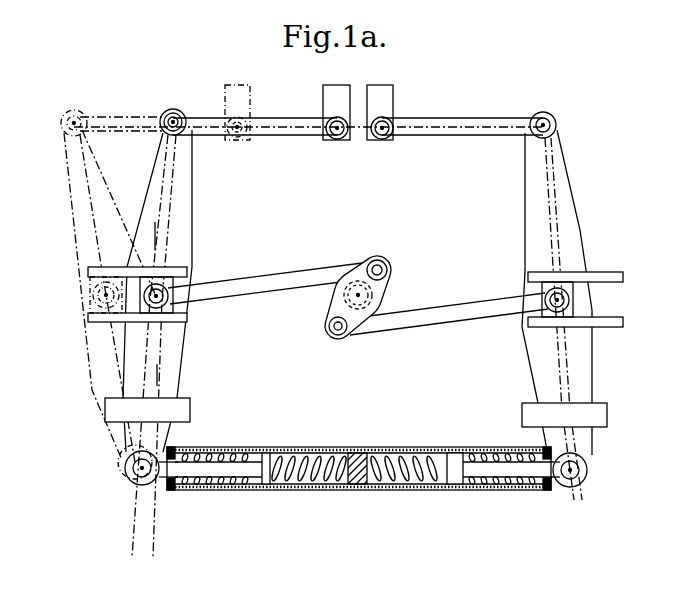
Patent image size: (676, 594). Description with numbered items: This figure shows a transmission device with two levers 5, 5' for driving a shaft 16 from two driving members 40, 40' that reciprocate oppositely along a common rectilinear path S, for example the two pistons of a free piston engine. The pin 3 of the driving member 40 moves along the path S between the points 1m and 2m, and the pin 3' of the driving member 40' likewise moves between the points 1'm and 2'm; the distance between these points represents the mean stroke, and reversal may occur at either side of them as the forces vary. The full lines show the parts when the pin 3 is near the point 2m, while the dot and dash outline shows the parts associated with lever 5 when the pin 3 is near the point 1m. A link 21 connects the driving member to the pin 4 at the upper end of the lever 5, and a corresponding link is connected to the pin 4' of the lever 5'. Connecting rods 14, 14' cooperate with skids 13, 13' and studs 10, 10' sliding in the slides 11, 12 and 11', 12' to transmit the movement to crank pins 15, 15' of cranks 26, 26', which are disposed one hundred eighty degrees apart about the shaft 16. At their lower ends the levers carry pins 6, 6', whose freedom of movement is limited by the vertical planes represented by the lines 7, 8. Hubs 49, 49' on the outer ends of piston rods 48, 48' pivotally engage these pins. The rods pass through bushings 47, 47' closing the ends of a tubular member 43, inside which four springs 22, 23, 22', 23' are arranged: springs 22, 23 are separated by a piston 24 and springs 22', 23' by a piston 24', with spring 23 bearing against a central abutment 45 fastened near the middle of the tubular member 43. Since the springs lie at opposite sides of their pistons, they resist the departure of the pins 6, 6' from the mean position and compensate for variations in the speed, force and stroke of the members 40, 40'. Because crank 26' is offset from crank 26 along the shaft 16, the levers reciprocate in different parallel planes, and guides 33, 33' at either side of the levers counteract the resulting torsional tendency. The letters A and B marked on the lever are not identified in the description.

The pin 4 is at (123, 110).
The pin 4' is at (554, 122).
The driving member 40 is at (273, 101).
The driving member 40' is at (385, 101).
The pin 3 is at (287, 111).
The pin 3' is at (396, 116).
The link 21 is at (285, 123).
The limit point 1m is at (226, 130).
The limit point 1'm is at (462, 140).
The limit point 2m is at (341, 133).
The limit point 2'm is at (399, 153).
The path S is at (266, 129).
The lever 5 is at (124, 296).
The lever 5' is at (561, 315).
The position A is at (147, 236).
The position B is at (164, 375).
The slide 11 is at (140, 259).
The slide 11' is at (575, 263).
The slide 12 is at (121, 328).
The slide 12' is at (561, 330).
The stud 10 is at (115, 311).
The stud 10' is at (569, 317).
The skid 13 is at (146, 314).
The skid 13' is at (582, 278).
The connecting rod 14 is at (270, 275).
The connecting rod 14' is at (447, 308).
The crank pin 15 is at (390, 268).
The crank pin 15' is at (353, 339).
The shaft 16 is at (345, 296).
The crank 26 is at (371, 297).
The crank 26' is at (310, 326).
The guide 33 is at (166, 409).
The guide 33' is at (580, 402).
The hub 49 is at (130, 485).
The hub 49' is at (590, 462).
The pin 6 is at (171, 453).
The pin 6' is at (555, 490).
The tubular member 43 is at (312, 447).
The central abutment 45 is at (358, 453).
The bushing 47 is at (180, 480).
The bushing 47' is at (543, 492).
The piston rod 48 is at (218, 449).
The piston rod 48' is at (508, 453).
The piston 24 is at (278, 455).
The piston 24' is at (462, 484).
The spring 22 is at (221, 483).
The spring 22' is at (404, 484).
The spring 23 is at (309, 484).
The spring 23' is at (501, 484).
The line 8 is at (144, 356).
The line 7 is at (164, 356).